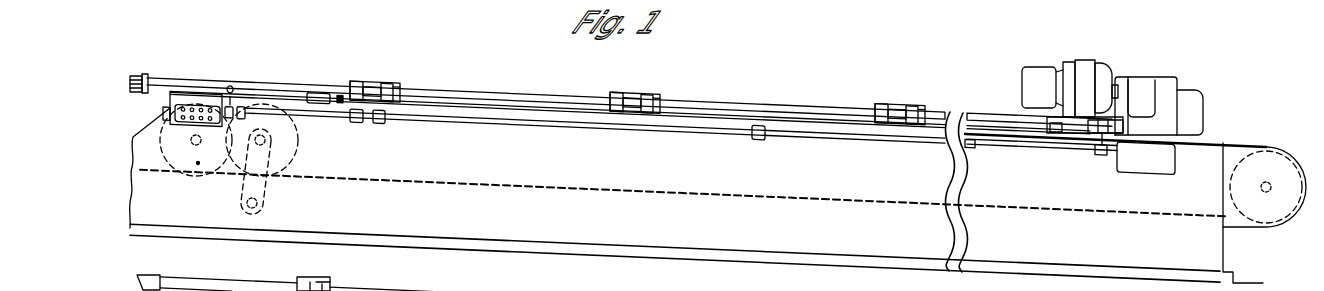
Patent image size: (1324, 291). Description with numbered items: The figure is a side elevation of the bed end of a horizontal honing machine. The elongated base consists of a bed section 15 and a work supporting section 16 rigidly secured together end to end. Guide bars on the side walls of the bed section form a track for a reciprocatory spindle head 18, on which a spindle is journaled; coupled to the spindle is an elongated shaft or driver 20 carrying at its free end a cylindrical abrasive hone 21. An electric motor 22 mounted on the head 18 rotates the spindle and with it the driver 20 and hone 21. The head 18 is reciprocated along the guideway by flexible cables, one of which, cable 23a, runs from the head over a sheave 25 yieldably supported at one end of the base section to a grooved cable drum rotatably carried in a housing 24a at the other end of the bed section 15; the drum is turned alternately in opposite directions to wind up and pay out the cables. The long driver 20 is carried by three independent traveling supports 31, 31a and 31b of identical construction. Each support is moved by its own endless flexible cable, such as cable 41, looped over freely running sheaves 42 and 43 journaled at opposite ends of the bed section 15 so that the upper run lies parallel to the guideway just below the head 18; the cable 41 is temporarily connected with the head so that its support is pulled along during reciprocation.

The bed section 15 is at (1172, 266).
The work supporting section 16 is at (150, 279).
The spindle head 18 is at (1153, 76).
The driver 20 is at (549, 92).
The hone 21 is at (141, 74).
The electric motor 22 is at (1077, 63).
The flexible cable 23a is at (481, 290).
The housing 24a is at (1243, 228).
The sheave 25 is at (298, 152).
The traveling support 31 is at (379, 81).
The traveling support 31a is at (640, 91).
The traveling support 31b is at (904, 103).
The endless flexible cable 41 is at (586, 191).
The sheave 42 is at (176, 168).
The sheave 43 is at (1228, 187).